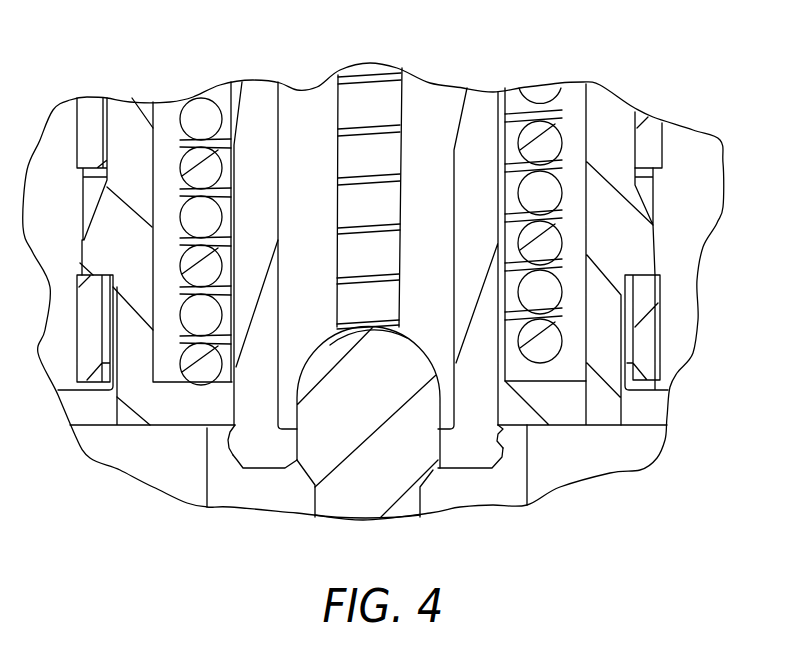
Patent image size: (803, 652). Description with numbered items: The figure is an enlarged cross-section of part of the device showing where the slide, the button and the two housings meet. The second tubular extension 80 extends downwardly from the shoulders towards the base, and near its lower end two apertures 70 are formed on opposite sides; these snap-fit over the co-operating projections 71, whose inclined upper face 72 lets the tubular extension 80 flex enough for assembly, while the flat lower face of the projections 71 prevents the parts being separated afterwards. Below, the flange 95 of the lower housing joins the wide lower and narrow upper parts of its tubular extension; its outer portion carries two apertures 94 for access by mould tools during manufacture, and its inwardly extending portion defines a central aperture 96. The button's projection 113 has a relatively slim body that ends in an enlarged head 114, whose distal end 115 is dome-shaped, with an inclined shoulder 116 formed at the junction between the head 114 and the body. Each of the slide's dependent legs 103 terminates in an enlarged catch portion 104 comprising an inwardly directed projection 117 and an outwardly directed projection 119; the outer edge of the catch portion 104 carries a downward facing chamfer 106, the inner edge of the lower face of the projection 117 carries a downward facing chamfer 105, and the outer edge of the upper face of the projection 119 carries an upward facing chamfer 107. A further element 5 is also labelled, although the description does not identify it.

The ball 5 is at (540, 100).
The apertures 70 is at (664, 178).
The projections 71 is at (648, 257).
The inclined upper face 72 is at (646, 198).
The second tubular extension 80 is at (83, 320).
The apertures 94 is at (656, 407).
The flange 95 is at (572, 403).
The central aperture 96 is at (228, 428).
The dependent legs 103 is at (251, 92).
The catch portion 104 is at (506, 482).
The downward facing chamfer 105 is at (285, 472).
The downward facing chamfer 106 is at (231, 462).
The upward facing chamfer 107 is at (504, 432).
The projection 113 is at (367, 506).
The enlarged head 114 is at (388, 400).
The distal end 115 is at (410, 336).
The inclined shoulder 116 is at (433, 484).
The inwardly directed projection 117 is at (450, 452).
The outwardly directed projection 119 is at (503, 457).